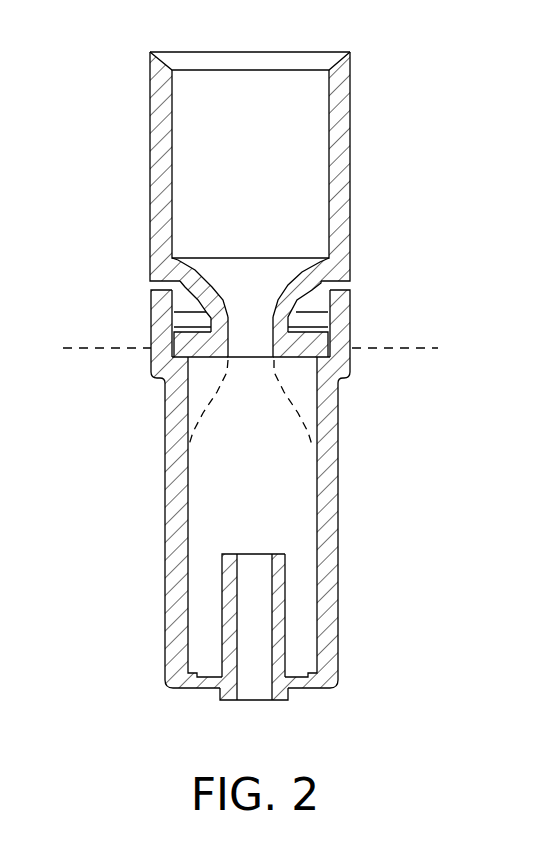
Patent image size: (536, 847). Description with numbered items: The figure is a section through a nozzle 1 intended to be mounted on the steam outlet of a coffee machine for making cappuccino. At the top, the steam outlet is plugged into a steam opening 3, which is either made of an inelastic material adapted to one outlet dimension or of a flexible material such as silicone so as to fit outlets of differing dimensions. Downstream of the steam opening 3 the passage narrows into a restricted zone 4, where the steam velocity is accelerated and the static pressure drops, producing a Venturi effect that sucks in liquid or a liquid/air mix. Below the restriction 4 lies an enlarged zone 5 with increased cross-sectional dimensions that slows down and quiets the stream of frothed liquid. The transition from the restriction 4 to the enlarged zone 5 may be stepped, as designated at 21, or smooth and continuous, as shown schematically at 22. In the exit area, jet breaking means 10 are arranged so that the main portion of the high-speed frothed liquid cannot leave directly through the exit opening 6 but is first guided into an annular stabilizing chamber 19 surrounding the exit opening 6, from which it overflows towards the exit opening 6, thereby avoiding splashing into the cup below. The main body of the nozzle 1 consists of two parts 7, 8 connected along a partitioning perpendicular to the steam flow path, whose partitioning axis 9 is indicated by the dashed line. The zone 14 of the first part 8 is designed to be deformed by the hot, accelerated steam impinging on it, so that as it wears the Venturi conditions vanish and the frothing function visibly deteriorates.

The nozzle 1 is at (364, 559).
The steam opening 3 is at (185, 57).
The restricted zone 4 is at (250, 360).
The enlarged zone 5 is at (300, 486).
The exit opening 6 is at (253, 700).
The second part of main body 7 is at (166, 495).
The first part of main body 8 is at (351, 172).
The partitioning axis 9 is at (88, 347).
The jet breaking means 10 is at (286, 640).
The zone of the first part 14 is at (210, 285).
The annular stabilizing chamber 19 is at (198, 638).
The stepped transition 21 is at (198, 384).
The smooth transition 22 is at (197, 422).